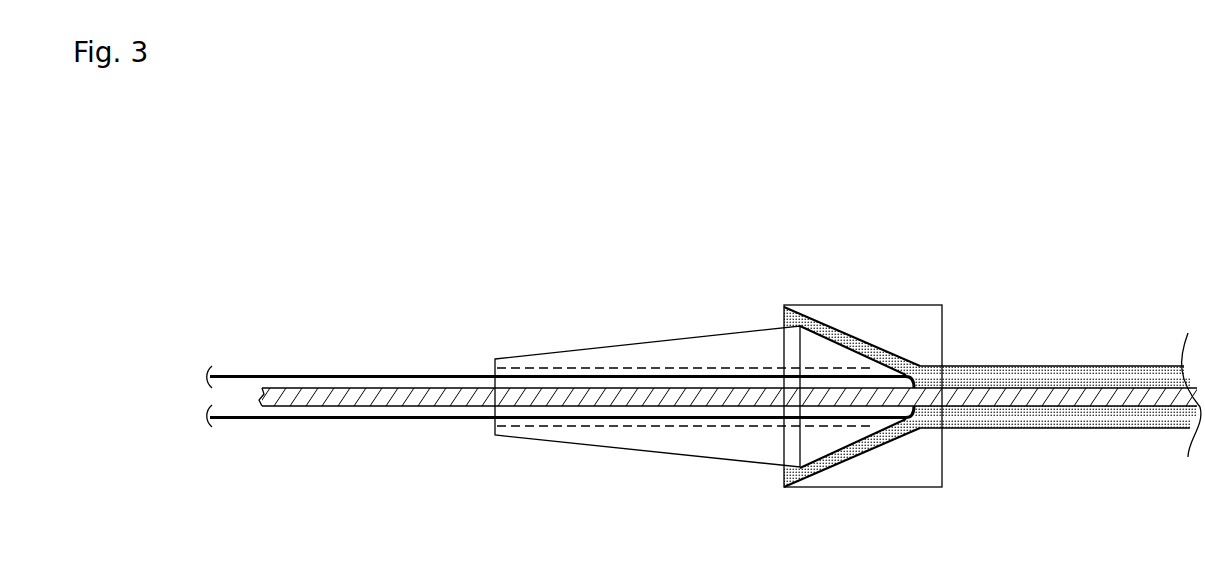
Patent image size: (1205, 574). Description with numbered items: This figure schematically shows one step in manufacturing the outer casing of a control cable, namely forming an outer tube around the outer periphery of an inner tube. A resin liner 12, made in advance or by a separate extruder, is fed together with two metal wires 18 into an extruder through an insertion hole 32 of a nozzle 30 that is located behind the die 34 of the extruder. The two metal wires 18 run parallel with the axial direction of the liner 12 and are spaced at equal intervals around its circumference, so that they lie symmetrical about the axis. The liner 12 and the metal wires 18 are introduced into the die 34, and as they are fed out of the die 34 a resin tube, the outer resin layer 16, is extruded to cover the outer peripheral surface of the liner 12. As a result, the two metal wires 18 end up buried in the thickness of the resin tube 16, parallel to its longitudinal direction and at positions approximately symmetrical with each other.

The resin liner 12 is at (305, 388).
The outer resin layer 16 is at (1086, 366).
The metal wires 18 is at (423, 375).
The nozzle 30 is at (707, 336).
The insertion hole 32 is at (585, 424).
The die 34 is at (922, 305).